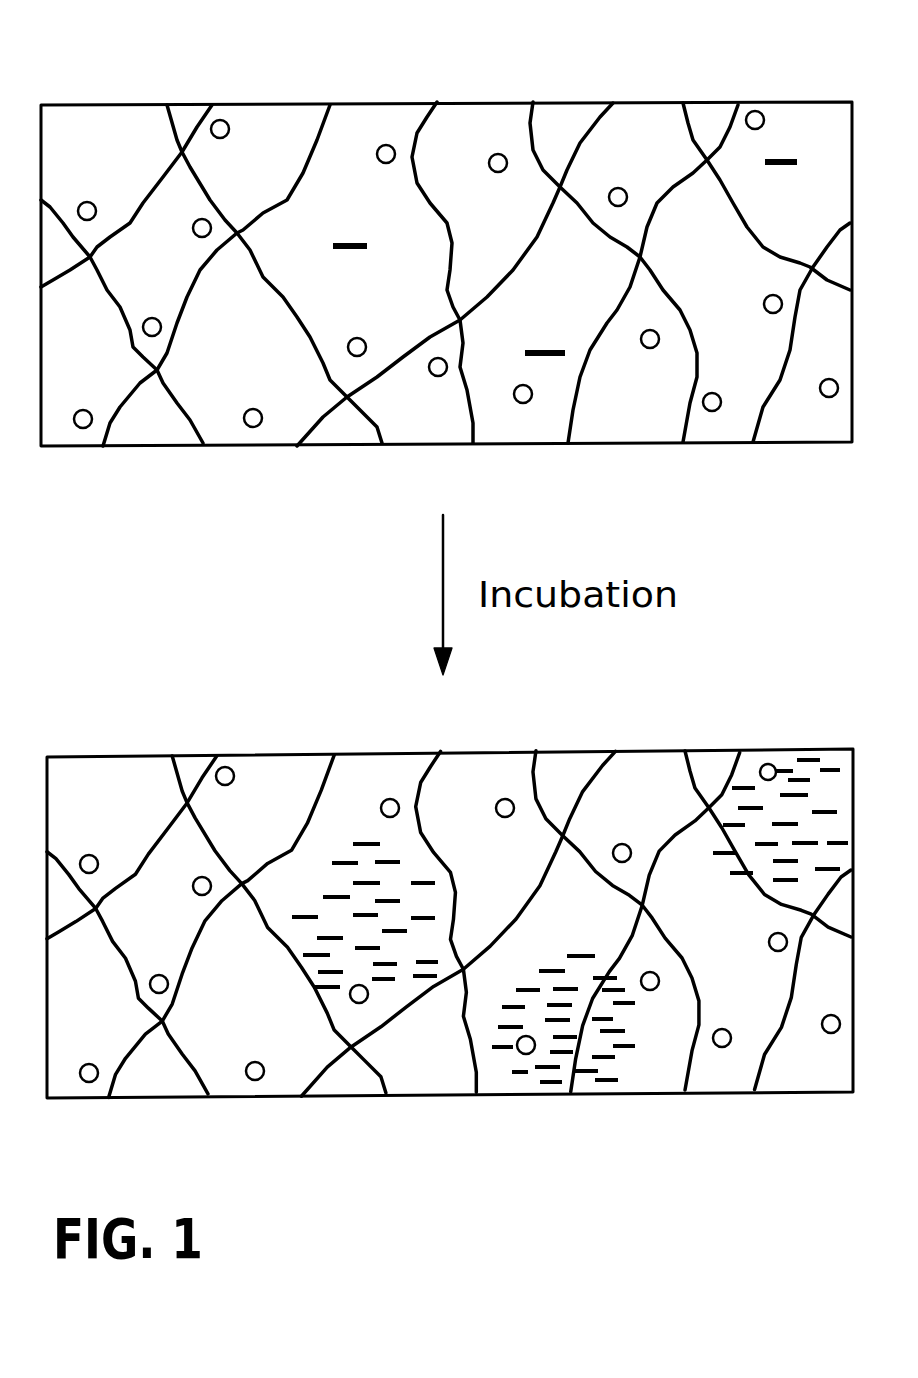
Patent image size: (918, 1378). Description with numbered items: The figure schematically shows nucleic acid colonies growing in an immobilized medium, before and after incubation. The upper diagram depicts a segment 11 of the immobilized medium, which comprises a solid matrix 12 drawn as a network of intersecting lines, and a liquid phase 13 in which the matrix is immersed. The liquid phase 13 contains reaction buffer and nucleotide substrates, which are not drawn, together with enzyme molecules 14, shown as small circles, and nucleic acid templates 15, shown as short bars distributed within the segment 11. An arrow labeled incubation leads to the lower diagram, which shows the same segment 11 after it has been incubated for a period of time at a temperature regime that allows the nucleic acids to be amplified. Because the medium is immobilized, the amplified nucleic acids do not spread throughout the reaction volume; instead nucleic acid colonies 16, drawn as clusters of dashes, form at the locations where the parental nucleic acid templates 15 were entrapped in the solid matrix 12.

The segment of immobilized medium 11 is at (353, 102).
The solid matrix 12 is at (150, 443).
The liquid phase 13 is at (550, 132).
The enzyme molecules 14 is at (253, 427).
The nucleic acid templates 15 is at (548, 358).
The nucleic acid colonies 16 is at (382, 1008).